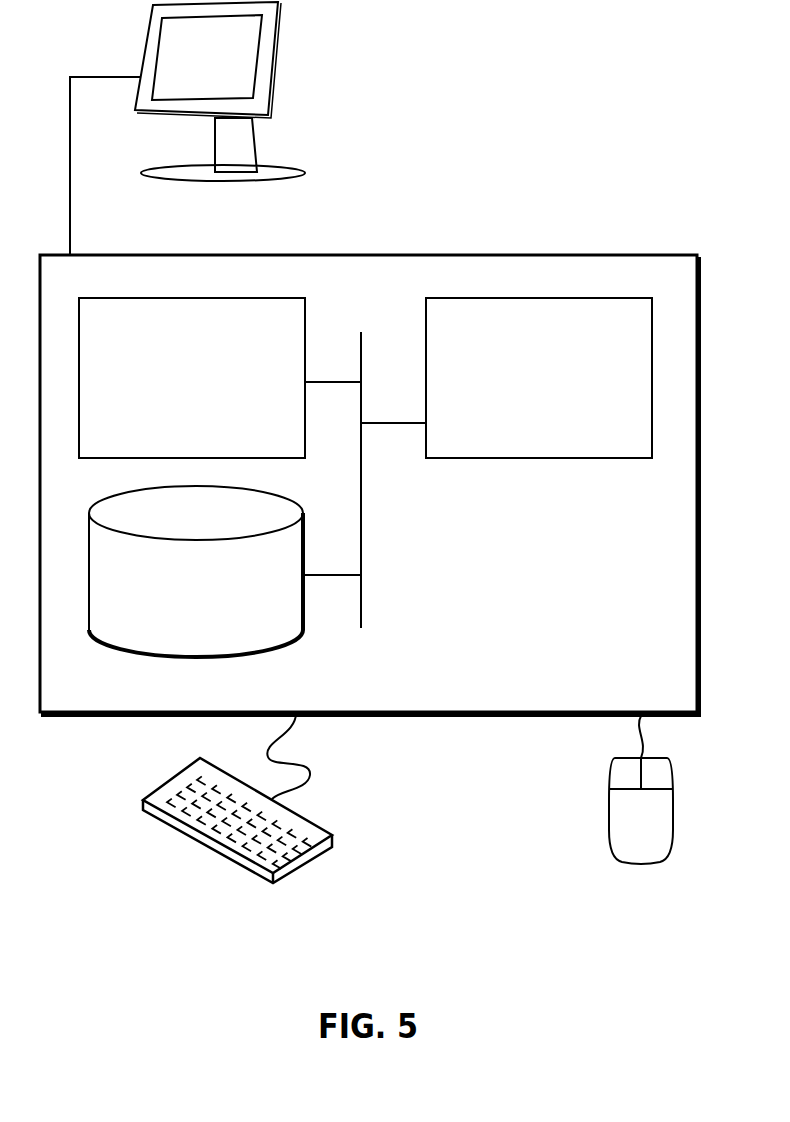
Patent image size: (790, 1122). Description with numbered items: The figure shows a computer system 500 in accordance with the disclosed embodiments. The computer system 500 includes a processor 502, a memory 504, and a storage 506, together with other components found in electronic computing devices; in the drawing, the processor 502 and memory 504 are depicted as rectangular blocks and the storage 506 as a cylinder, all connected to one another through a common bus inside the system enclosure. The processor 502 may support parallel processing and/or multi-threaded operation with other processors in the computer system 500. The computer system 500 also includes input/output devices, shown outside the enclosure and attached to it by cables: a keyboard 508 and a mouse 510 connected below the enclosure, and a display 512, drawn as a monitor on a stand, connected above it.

The computer system 500 is at (415, 235).
The processor 502 is at (521, 390).
The memory 504 is at (171, 390).
The storage device 506 is at (178, 598).
The keyboard 508 is at (162, 823).
The mouse 510 is at (619, 832).
The display monitor 512 is at (187, 128).